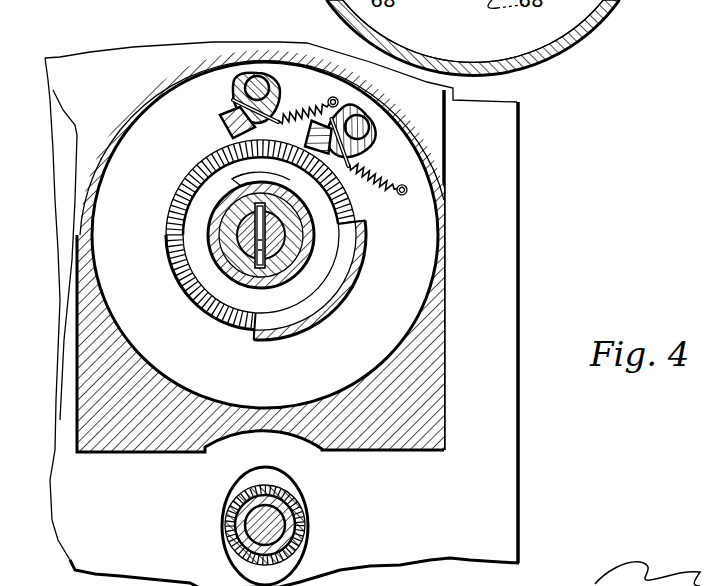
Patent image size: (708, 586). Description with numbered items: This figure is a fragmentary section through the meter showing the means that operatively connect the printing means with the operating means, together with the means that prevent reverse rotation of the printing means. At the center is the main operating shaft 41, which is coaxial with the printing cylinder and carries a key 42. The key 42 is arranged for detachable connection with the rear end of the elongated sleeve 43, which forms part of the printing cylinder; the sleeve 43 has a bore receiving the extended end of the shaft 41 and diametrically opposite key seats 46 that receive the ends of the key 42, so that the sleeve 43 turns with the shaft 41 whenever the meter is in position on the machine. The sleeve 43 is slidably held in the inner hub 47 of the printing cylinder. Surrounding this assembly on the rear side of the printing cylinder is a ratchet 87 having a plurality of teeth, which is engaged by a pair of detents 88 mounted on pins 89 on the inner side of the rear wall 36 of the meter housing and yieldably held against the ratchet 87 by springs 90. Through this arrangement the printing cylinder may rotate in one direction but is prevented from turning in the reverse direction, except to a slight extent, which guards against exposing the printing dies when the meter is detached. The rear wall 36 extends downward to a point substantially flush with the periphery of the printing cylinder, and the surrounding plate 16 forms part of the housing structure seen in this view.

The supporting plate 16 is at (500, 292).
The rear wall 36 is at (440, 178).
The main operating shaft 41 is at (250, 243).
The key 42 is at (257, 205).
The elongated sleeve 43 is at (222, 262).
The key seats 46 is at (262, 262).
The inner hub 47 is at (193, 287).
The ratchet 87 is at (207, 213).
The detents 88 is at (222, 128).
The pins 89 is at (258, 75).
The springs 90 is at (297, 108).